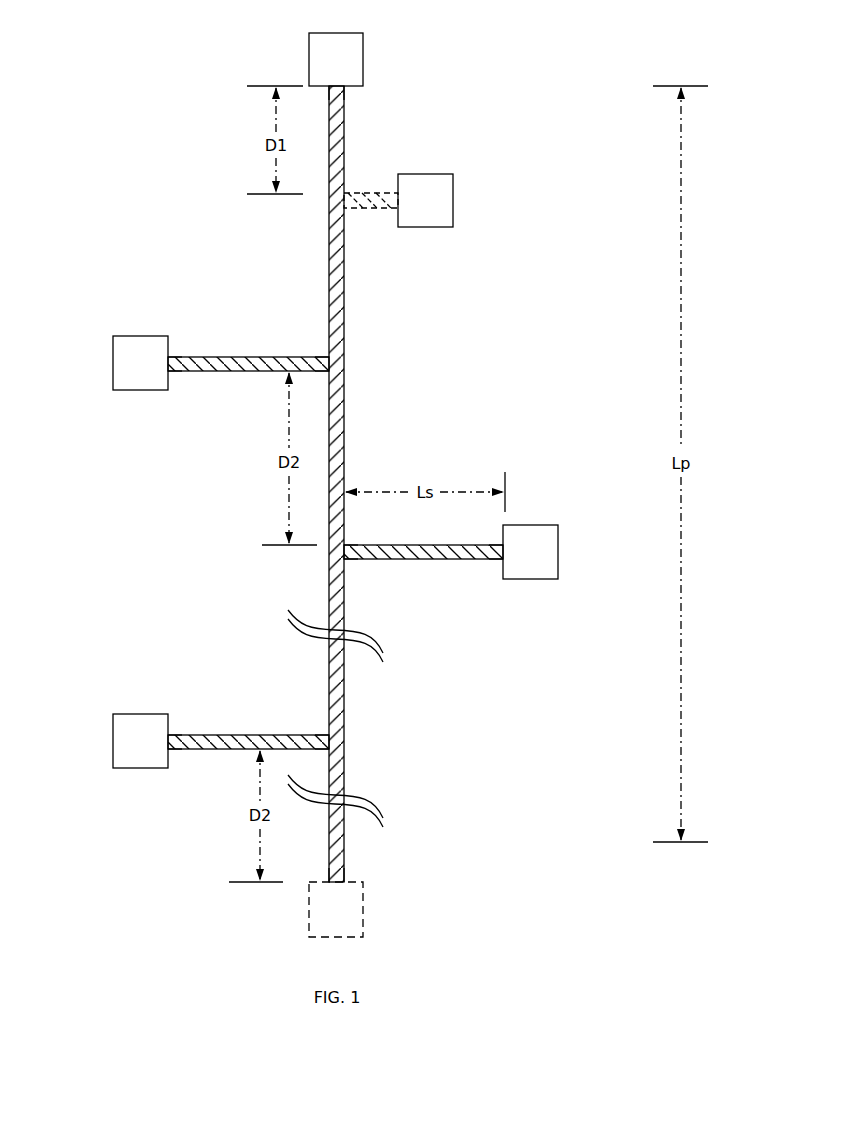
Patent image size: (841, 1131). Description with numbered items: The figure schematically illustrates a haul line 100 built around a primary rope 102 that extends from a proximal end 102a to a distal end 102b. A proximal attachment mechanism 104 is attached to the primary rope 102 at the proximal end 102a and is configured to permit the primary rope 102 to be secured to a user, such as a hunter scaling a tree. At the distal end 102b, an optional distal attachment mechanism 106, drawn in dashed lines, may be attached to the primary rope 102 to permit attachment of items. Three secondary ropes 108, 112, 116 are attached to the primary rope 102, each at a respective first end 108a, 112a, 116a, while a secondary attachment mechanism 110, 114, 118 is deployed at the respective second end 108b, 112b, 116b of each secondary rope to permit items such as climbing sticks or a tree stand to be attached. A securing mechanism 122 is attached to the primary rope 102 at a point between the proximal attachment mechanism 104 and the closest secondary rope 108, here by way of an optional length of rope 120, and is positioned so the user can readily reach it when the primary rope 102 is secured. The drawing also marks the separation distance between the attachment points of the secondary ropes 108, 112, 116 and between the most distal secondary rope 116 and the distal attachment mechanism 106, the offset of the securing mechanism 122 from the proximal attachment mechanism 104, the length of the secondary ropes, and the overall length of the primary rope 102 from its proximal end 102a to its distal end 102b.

The haul line 100 is at (147, 206).
The primary rope 102 is at (344, 268).
The proximal end 102a is at (376, 100).
The distal end 102b is at (377, 855).
The proximal attachment mechanism 104 is at (309, 60).
The distal attachment mechanism 106 is at (309, 895).
The secondary rope 108 is at (195, 357).
The first end 108a is at (312, 336).
The second end 108b is at (181, 386).
The secondary attachment mechanism 110 is at (113, 362).
The secondary rope 112 is at (450, 560).
The first end 112a is at (362, 577).
The second end 112b is at (490, 577).
The secondary attachment mechanism 114 is at (558, 552).
The secondary rope 116 is at (195, 735).
The first end 116a is at (312, 714).
The second end 116b is at (181, 764).
The secondary attachment mechanism 118 is at (113, 740).
The length of rope 120 is at (370, 194).
The securing mechanism 122 is at (453, 200).